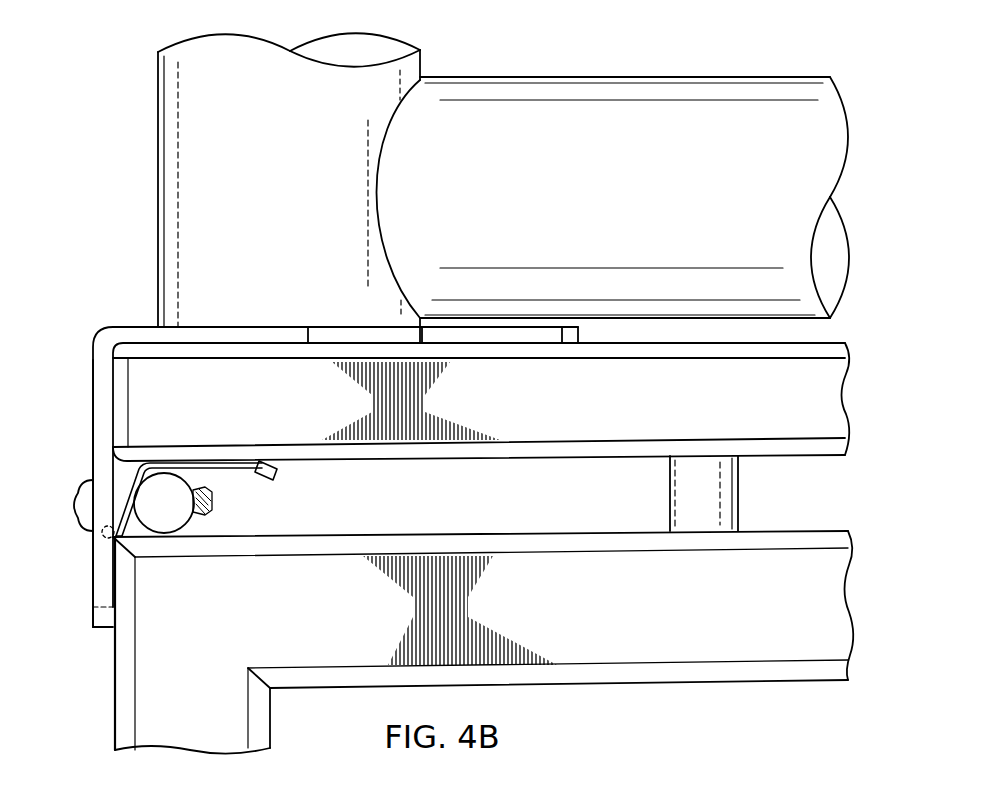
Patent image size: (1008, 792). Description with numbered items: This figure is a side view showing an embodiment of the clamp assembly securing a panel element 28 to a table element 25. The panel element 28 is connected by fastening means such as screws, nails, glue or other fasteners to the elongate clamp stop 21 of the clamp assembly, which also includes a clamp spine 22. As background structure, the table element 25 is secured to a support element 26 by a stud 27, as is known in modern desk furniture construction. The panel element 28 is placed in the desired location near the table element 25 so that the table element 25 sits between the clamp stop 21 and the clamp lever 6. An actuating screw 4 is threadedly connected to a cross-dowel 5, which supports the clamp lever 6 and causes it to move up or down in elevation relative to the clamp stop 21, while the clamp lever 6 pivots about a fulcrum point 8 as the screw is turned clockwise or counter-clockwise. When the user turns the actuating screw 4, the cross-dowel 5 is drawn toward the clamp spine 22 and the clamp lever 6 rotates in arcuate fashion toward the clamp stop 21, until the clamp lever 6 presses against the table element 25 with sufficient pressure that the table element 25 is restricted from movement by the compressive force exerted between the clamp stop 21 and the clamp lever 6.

The actuating screw 4 is at (78, 500).
The cross-dowel 5 is at (175, 517).
The clamp lever 6 is at (272, 480).
The fulcrum point 8 is at (108, 536).
The clamp stop 21 is at (140, 327).
The clamp spine 22 is at (93, 405).
The table element 25 is at (527, 462).
The support element 26 is at (642, 684).
The stud 27 is at (740, 492).
The panel element 28 is at (158, 192).